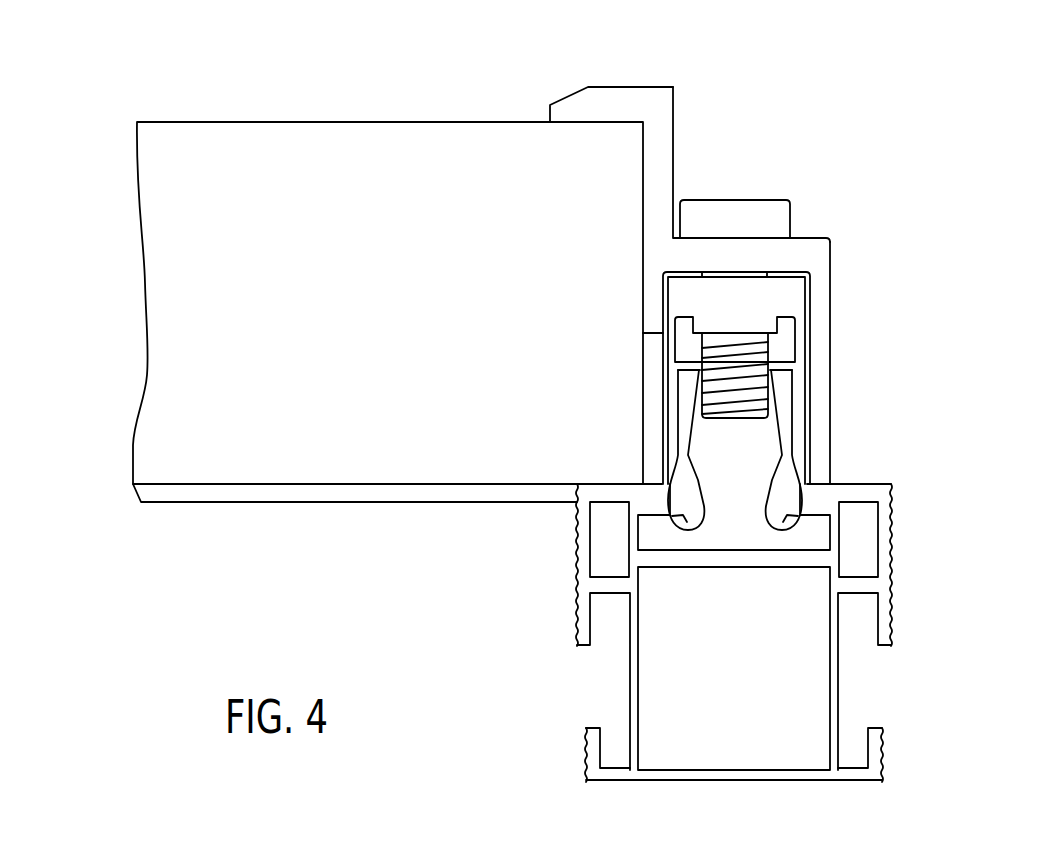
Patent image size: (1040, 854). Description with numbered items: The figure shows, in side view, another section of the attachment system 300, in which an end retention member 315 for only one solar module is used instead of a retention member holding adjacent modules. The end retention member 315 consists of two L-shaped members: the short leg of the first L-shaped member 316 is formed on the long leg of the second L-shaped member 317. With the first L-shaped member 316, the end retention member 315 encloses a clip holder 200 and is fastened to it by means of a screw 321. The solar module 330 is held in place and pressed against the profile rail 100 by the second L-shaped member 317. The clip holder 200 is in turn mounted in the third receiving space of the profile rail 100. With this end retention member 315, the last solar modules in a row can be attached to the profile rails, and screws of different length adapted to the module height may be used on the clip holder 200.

The profile rail 100 is at (810, 691).
The clip holder 200 is at (805, 438).
The attachment system 300 is at (928, 119).
The end retention member 315 is at (696, 123).
The first L-shaped member 316 is at (820, 309).
The second L-shaped member 317 is at (607, 102).
The screw 321 is at (762, 200).
The solar module 330 is at (157, 291).